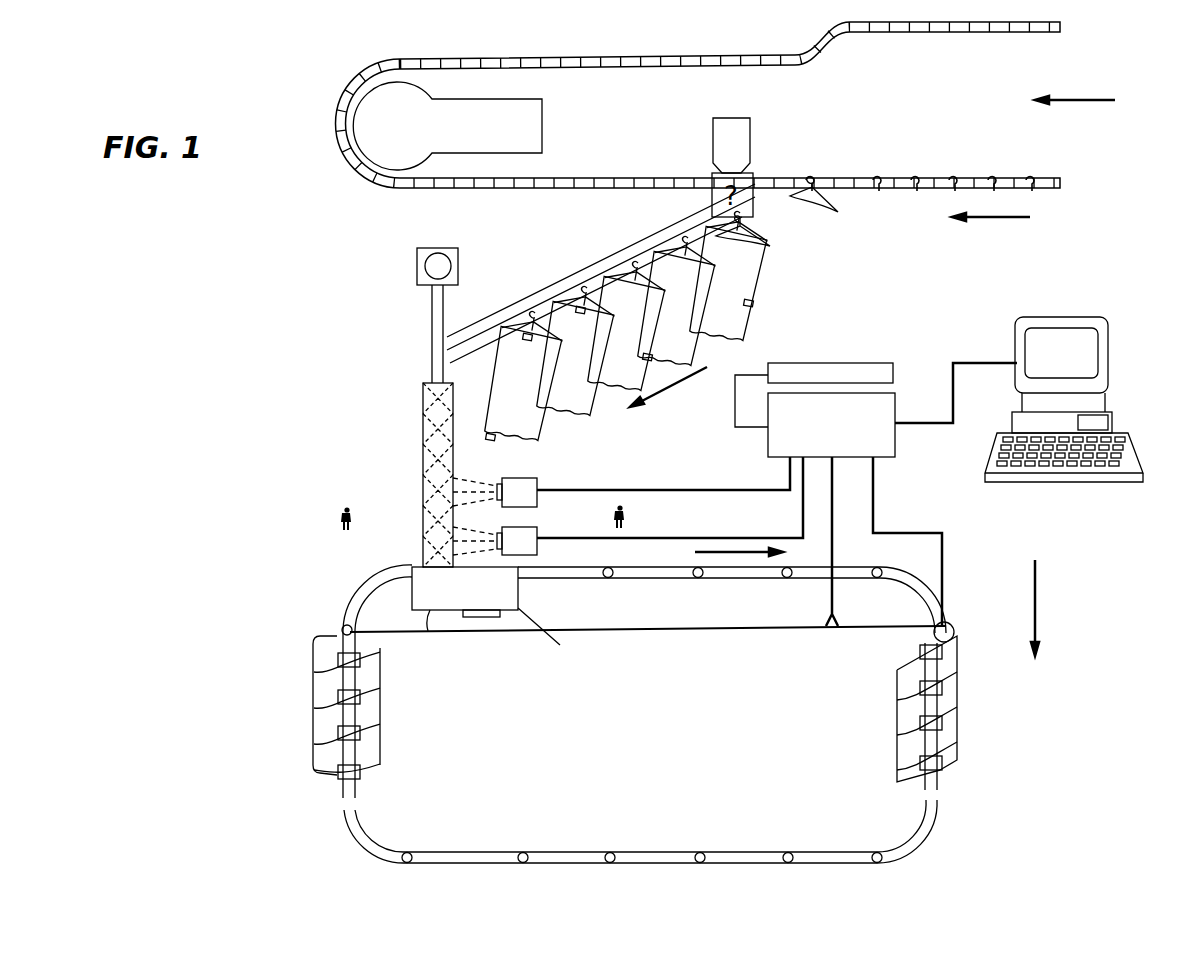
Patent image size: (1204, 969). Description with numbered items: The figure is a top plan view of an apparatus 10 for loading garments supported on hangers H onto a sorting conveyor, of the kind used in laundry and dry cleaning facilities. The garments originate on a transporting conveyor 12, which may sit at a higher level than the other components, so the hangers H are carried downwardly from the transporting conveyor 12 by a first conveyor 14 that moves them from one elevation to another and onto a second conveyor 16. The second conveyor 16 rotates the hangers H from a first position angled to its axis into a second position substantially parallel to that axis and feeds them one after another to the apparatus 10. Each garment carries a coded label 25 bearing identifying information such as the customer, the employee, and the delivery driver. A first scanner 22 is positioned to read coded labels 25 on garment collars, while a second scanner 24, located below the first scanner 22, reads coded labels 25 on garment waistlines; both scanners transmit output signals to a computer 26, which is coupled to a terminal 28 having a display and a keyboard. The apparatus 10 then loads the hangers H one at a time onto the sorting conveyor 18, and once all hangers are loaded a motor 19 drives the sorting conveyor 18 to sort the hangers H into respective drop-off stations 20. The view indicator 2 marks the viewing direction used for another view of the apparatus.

The apparatus for loading articles supported on hooked members onto a conveyor 10 is at (400, 463).
The transporting conveyor 12 is at (355, 73).
The first conveyor 14 is at (660, 272).
The second conveyor 16 is at (432, 319).
The sorting conveyor 18 is at (331, 791).
The motor 19 is at (954, 628).
The drop-off stations 20 is at (318, 676).
The first scanner 22 is at (538, 480).
The second scanner 24 is at (539, 549).
The coded label 25 is at (761, 303).
The computer 26 is at (768, 452).
The terminal 28 is at (1110, 345).
The view direction indicator for FIG. 2 is at (483, 519).
The hangers H is at (838, 214).